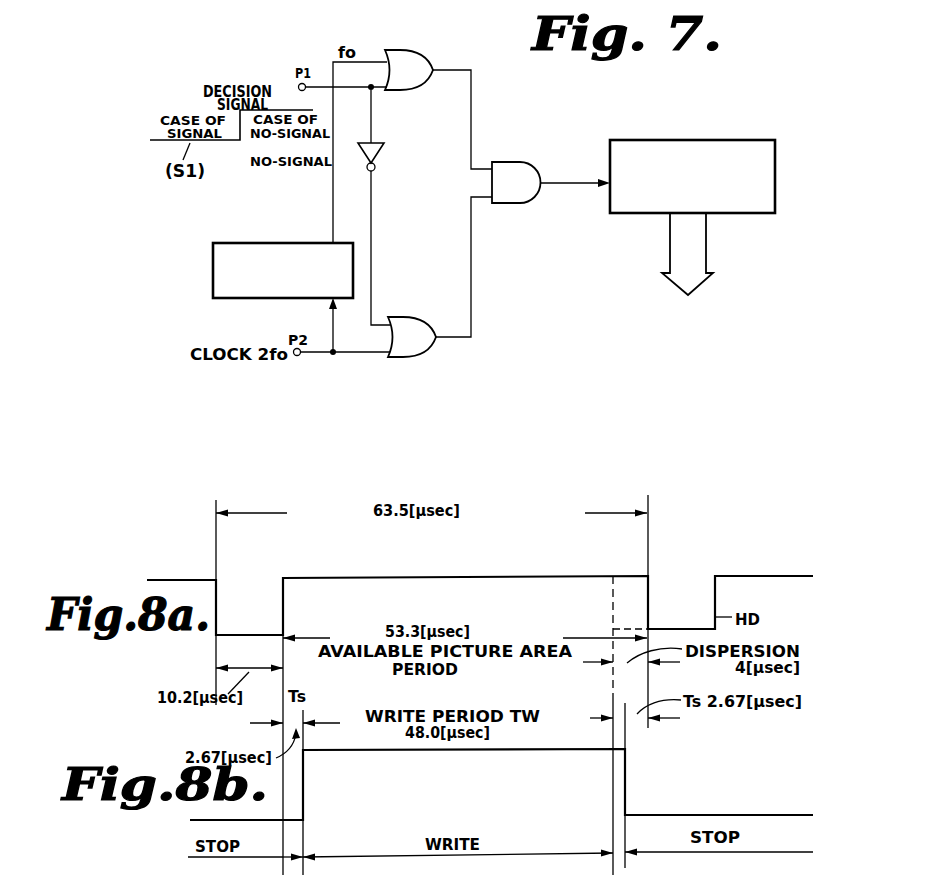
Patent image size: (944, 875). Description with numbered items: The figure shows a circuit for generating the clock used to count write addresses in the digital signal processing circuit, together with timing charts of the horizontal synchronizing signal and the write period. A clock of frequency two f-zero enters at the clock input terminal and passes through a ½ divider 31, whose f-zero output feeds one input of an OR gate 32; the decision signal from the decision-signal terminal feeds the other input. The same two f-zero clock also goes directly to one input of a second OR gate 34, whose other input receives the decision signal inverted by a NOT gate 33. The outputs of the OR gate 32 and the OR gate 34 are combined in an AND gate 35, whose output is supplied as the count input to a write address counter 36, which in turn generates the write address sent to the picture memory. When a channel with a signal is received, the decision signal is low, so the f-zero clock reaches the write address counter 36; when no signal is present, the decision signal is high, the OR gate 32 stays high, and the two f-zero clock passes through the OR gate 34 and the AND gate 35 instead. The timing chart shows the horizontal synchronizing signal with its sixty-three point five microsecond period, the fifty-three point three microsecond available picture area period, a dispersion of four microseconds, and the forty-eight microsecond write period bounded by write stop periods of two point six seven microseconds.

The ½ divider 31 is at (290, 243).
The OR gate 32 is at (420, 50).
The NOT gate 33 is at (382, 150).
The OR gate 34 is at (416, 317).
The AND gate 35 is at (518, 162).
The write address counter 36 is at (683, 140).